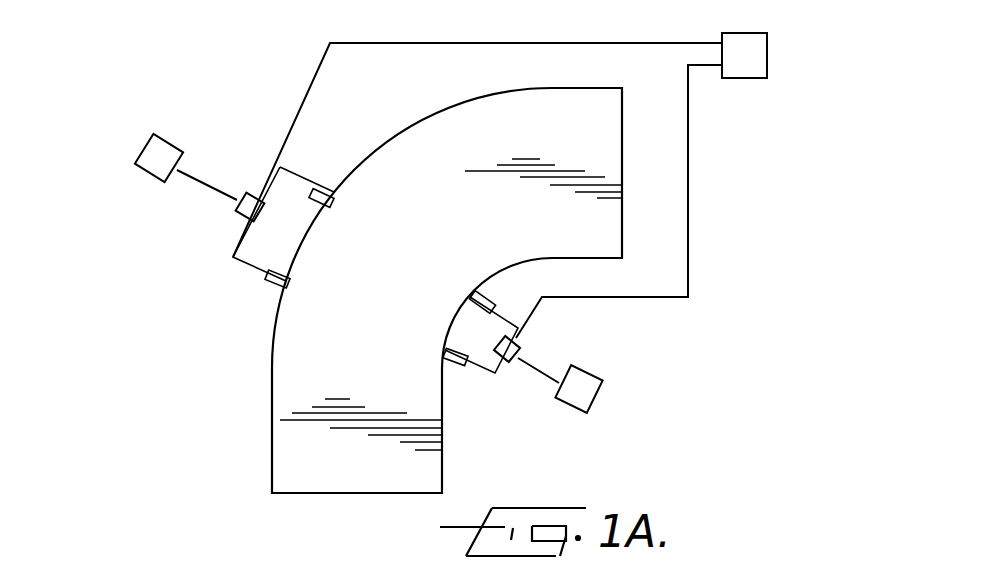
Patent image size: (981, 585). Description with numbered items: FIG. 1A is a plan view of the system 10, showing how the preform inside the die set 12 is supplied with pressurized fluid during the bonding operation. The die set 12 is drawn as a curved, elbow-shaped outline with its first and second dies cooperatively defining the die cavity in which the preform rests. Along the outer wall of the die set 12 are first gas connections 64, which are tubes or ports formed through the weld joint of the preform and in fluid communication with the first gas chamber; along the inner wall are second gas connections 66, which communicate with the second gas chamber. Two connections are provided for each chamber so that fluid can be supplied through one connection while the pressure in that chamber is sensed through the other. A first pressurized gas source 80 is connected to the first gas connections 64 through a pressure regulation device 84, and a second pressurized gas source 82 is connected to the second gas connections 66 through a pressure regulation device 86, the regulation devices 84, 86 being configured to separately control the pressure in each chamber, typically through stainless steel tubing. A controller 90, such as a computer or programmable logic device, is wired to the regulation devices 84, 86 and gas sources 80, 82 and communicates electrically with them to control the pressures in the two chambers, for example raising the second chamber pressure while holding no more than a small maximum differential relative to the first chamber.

The system 10 is at (228, 100).
The die set 12 is at (287, 400).
The first gas connections 64 is at (322, 190).
The second gas connections 66 is at (493, 301).
The first pressurized gas source 80 is at (147, 153).
The second pressurized gas source 82 is at (590, 395).
The pressure regulation device 84 is at (237, 213).
The pressure regulation device 86 is at (520, 348).
The controller 90 is at (755, 60).